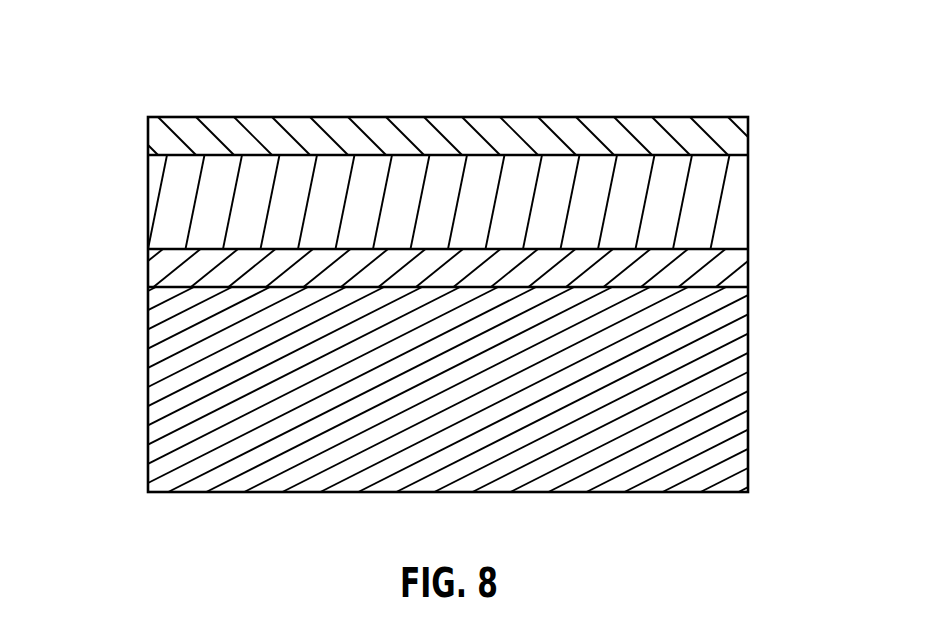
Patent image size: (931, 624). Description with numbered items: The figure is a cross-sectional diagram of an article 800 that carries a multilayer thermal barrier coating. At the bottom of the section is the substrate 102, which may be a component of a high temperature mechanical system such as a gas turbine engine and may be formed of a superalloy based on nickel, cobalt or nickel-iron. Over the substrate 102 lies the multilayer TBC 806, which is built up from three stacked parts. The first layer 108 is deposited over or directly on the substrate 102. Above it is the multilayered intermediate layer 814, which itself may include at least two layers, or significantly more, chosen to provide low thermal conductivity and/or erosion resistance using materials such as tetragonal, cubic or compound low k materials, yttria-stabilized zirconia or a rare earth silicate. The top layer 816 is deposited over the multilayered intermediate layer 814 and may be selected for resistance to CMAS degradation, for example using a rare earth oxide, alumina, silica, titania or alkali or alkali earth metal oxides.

The article 800 is at (148, 97).
The multilayer TBC 806 is at (140, 117).
The top layer 816 is at (738, 136).
The multilayered intermediate layer 814 is at (738, 201).
The first layer 108 is at (738, 268).
The substrate 102 is at (160, 387).